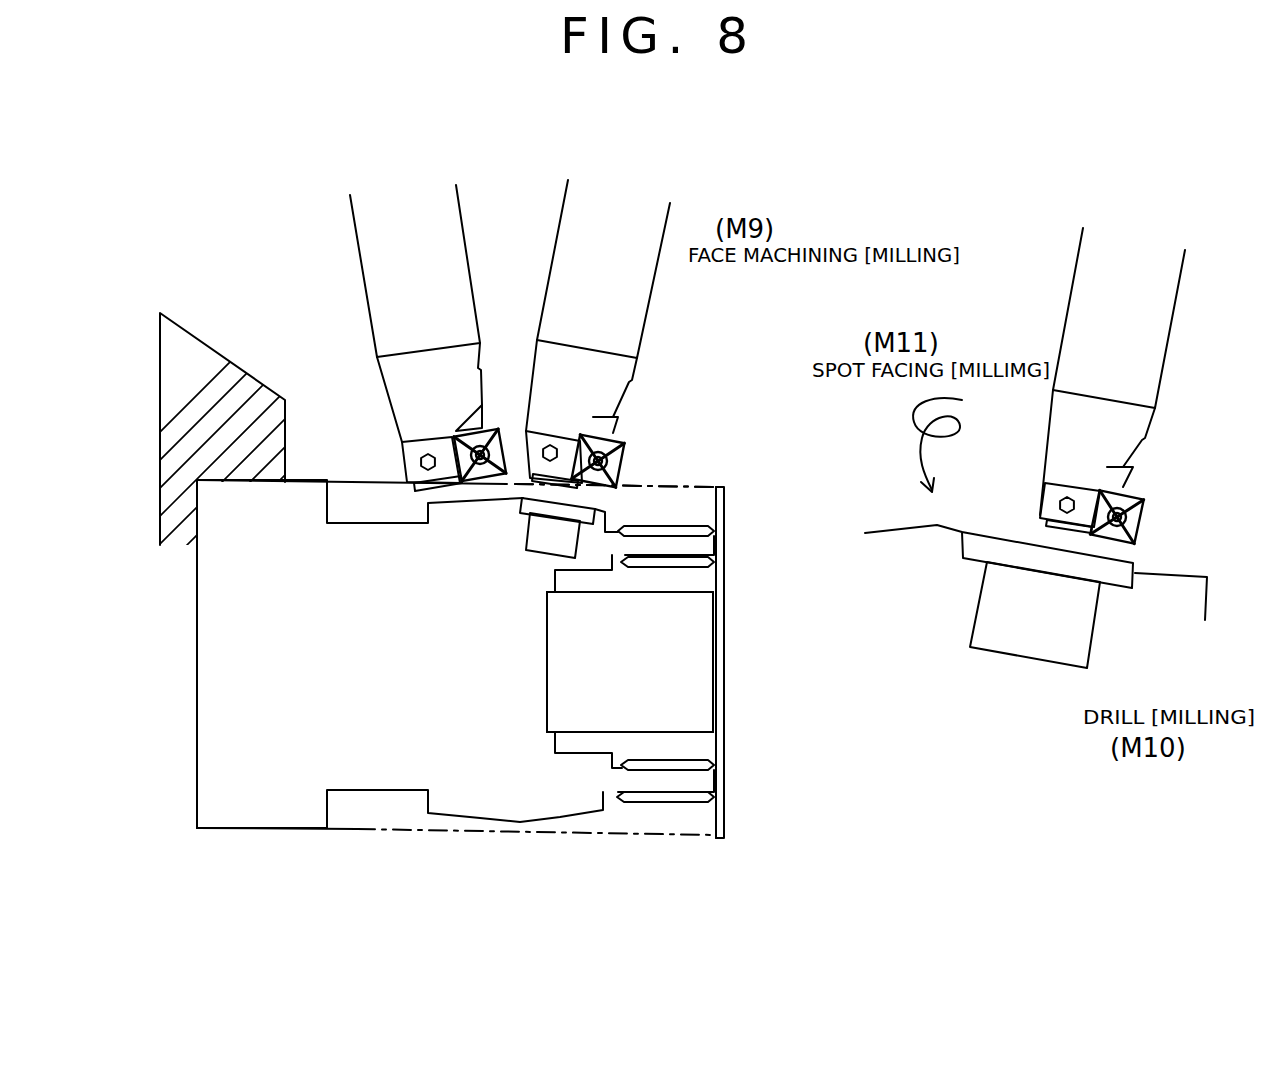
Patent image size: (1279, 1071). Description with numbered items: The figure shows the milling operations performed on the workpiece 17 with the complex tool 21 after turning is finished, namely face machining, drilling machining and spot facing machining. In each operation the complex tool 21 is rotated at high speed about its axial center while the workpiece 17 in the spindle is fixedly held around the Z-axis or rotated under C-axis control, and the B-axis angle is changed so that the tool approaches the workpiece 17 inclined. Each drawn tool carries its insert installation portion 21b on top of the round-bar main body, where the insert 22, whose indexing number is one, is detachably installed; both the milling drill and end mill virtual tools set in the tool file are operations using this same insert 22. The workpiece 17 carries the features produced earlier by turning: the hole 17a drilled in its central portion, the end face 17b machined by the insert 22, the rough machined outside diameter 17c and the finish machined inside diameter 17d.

The workpiece 17 is at (255, 811).
The hole 17a is at (697, 732).
The end face 17b is at (724, 544).
The outside diameter 17c is at (680, 486).
The inside diameter 17d is at (691, 674).
The complex tool 21 is at (463, 224).
The insert installation portion 21b is at (387, 390).
The insert 22 is at (513, 433).